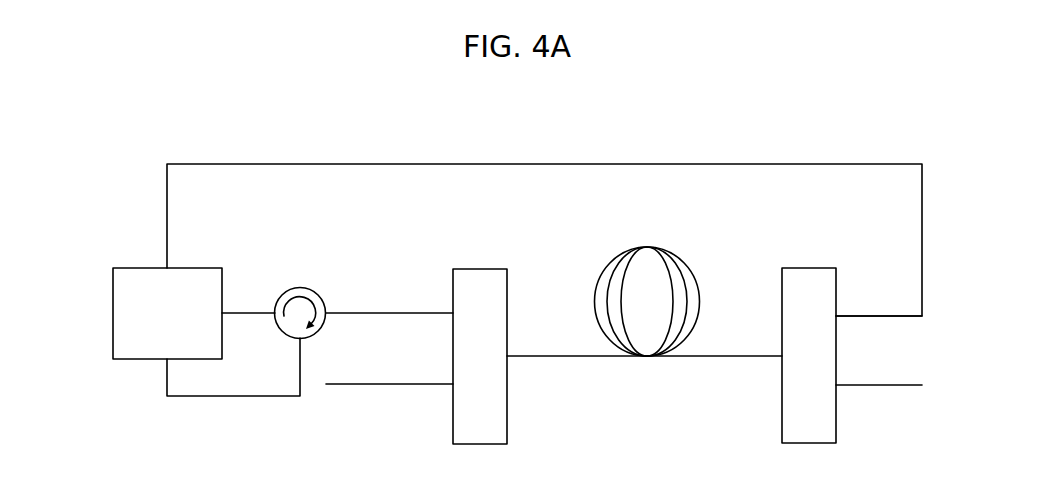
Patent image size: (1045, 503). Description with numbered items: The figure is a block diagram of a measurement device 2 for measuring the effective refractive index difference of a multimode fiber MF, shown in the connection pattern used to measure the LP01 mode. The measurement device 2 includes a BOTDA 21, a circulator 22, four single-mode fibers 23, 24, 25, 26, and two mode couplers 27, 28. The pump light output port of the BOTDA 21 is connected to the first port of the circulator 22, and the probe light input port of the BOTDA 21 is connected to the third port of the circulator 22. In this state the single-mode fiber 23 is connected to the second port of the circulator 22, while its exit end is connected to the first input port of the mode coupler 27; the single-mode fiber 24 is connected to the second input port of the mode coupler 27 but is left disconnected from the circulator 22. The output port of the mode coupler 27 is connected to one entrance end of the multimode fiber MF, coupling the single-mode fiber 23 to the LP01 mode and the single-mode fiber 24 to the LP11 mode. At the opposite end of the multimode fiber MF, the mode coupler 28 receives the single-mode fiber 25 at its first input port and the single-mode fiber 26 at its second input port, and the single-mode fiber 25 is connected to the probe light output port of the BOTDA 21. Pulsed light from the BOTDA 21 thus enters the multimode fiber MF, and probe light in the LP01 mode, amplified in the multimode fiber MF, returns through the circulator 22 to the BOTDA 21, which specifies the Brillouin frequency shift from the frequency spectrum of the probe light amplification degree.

The measurement device 2 is at (785, 148).
The BOTDA 21 is at (112, 311).
The circulator 22 is at (301, 286).
The single-mode fiber 23 is at (397, 312).
The single-mode fiber 24 is at (403, 390).
The single-mode fiber 25 is at (899, 314).
The single-mode fiber 26 is at (893, 392).
The mode coupler 27 is at (481, 268).
The mode coupler 28 is at (808, 268).
The multimode fiber MF is at (646, 247).